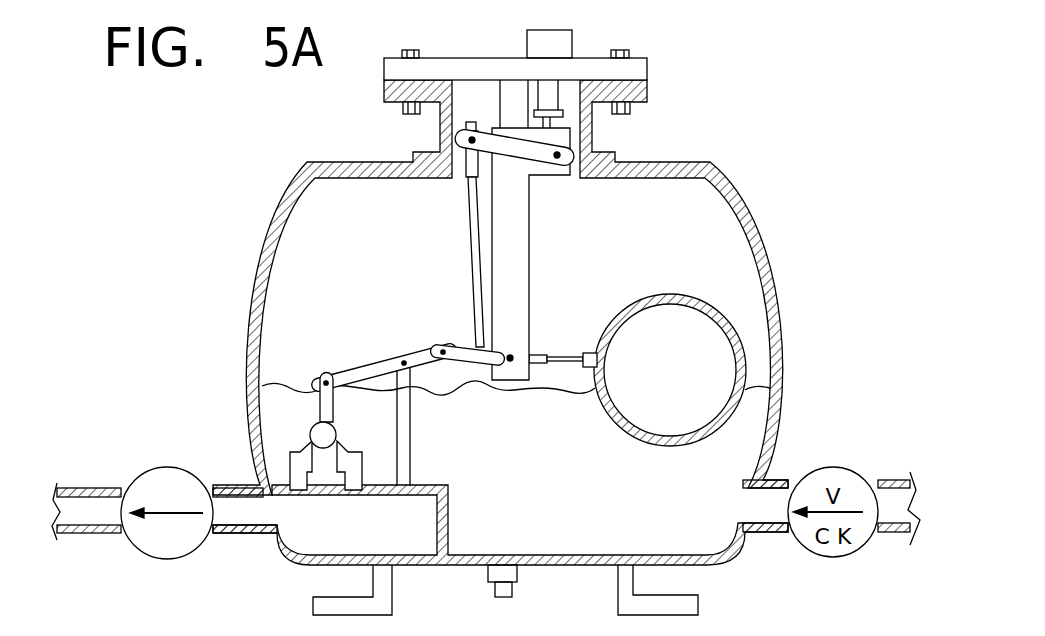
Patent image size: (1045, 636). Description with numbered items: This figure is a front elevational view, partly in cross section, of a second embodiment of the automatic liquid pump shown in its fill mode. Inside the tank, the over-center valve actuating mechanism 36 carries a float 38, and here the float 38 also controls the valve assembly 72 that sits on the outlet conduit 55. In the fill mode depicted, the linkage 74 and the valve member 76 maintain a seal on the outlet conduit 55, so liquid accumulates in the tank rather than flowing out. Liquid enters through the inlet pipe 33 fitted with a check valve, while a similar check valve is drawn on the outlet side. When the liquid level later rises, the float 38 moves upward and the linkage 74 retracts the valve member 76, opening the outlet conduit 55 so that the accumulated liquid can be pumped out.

The inlet pipe with check valve 33 is at (90, 505).
The over-center valve actuating mechanism 36 is at (558, 218).
The float 38 is at (683, 392).
The outlet conduit 55 is at (238, 508).
The valve assembly 72 is at (320, 362).
The linkage 74 is at (388, 366).
The valve member 76 is at (309, 438).